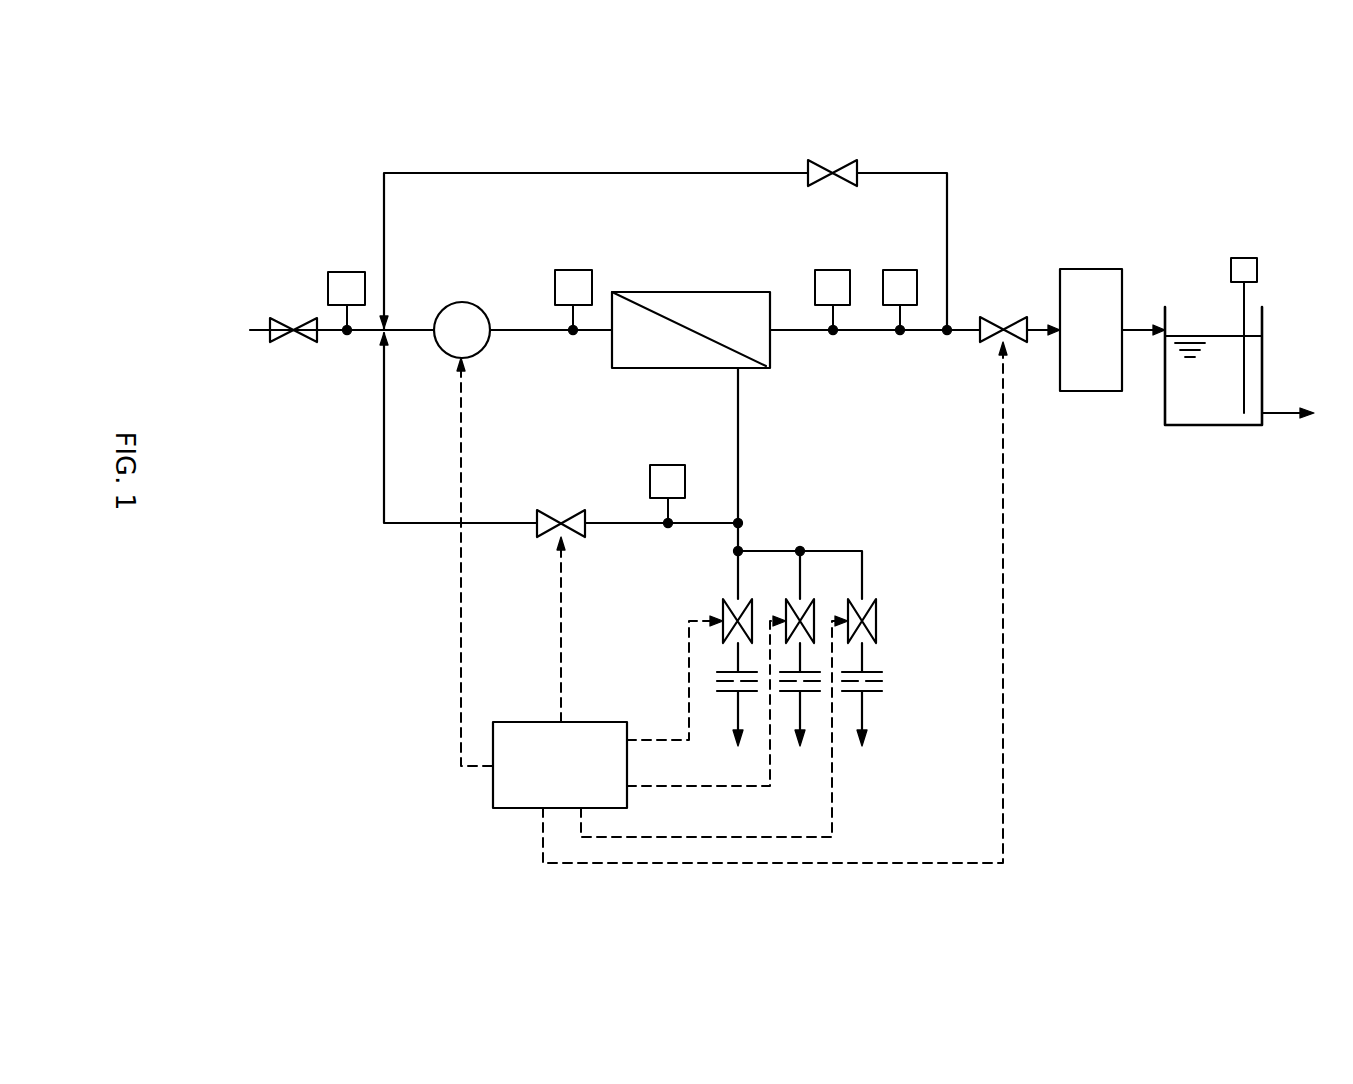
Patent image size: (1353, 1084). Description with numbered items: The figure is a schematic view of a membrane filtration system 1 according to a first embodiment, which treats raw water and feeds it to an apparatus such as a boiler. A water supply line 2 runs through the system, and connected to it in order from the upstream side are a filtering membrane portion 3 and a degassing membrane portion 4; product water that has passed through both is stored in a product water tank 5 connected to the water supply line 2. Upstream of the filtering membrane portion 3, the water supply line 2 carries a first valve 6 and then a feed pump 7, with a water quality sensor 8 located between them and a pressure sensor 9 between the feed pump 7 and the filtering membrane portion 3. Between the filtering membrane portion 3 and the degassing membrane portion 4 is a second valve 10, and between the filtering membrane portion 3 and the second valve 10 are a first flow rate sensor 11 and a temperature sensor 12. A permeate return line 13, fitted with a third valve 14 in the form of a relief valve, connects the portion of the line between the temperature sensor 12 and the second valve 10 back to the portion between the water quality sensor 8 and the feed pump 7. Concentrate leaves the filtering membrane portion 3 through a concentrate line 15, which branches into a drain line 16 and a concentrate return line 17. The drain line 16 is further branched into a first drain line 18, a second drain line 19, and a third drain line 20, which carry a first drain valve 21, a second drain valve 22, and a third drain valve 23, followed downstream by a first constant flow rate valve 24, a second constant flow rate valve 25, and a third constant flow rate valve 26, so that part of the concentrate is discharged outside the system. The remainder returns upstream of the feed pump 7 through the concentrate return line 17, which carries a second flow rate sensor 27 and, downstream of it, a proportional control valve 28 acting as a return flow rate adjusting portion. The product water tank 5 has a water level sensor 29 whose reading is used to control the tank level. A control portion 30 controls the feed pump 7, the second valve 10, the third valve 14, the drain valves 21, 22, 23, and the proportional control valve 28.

The membrane filtration system 1 is at (974, 158).
The water supply line 2 is at (410, 327).
The filtering membrane portion 3 is at (695, 292).
The degassing membrane portion 4 is at (1088, 391).
The product water tank 5 is at (1212, 427).
The first valve 6 is at (297, 318).
The feed pump 7 is at (468, 303).
The water quality sensor 8 is at (348, 272).
The pressure sensor 9 is at (574, 270).
The second valve 10 is at (1003, 317).
The first flow rate sensor 11 is at (843, 270).
The temperature sensor 12 is at (898, 270).
The permeate return line 13 is at (947, 207).
The third valve 14 is at (840, 160).
The concentrate line 15 is at (744, 447).
The drain line 16 is at (742, 537).
The concentrate return line 17 is at (420, 524).
The first drain line 18 is at (737, 573).
The second drain line 19 is at (802, 568).
The third drain line 20 is at (862, 572).
The first drain valve 21 is at (741, 616).
The second drain valve 22 is at (804, 616).
The third drain valve 23 is at (875, 632).
The first constant flow rate valve 24 is at (730, 697).
The second constant flow rate valve 25 is at (795, 697).
The third constant flow rate valve 26 is at (873, 697).
The second flow rate sensor 27 is at (673, 465).
The proportional control valve 28 is at (564, 510).
The water level sensor 29 is at (1244, 258).
The control portion 30 is at (525, 812).